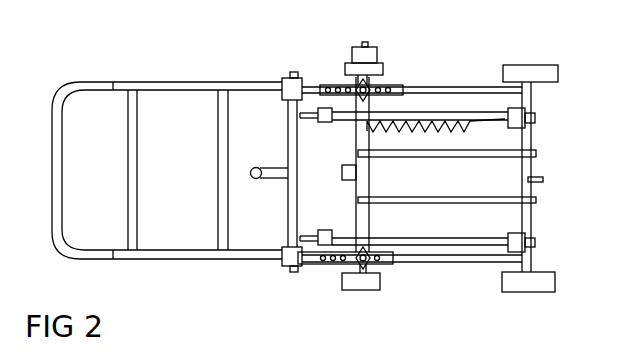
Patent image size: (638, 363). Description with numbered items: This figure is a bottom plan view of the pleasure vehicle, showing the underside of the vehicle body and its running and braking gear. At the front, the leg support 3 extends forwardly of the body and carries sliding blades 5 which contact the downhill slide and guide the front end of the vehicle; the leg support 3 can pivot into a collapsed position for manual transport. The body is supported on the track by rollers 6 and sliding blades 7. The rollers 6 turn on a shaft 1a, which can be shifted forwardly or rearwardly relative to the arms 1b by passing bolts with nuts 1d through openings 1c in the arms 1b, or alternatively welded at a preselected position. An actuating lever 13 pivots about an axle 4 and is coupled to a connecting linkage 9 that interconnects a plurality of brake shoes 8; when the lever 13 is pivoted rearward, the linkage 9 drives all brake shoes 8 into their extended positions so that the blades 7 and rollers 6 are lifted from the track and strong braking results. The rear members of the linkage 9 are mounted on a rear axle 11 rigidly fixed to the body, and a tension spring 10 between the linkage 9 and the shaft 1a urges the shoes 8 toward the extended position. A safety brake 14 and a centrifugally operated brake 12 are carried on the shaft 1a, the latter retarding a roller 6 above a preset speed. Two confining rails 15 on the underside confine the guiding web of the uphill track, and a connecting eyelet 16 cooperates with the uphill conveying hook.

The shaft 1a is at (358, 218).
The arms 1b is at (388, 265).
The openings 1c is at (380, 86).
The nuts 1d is at (350, 266).
The leg support 3 is at (148, 81).
The axle 4 is at (287, 216).
The sliding blades 5 is at (82, 258).
The rollers 6 is at (362, 284).
The sliding blades 7 is at (543, 285).
The brake shoes 8 is at (323, 106).
The connecting linkage 9 is at (453, 113).
The tension spring 10 is at (420, 130).
The axle 11 is at (528, 225).
The centrifugally operated brake 12 is at (360, 54).
The actuating lever 13 is at (258, 166).
The safety brake 14 is at (344, 166).
The confining rails 15 is at (448, 205).
The connecting eyelet 16 is at (543, 178).